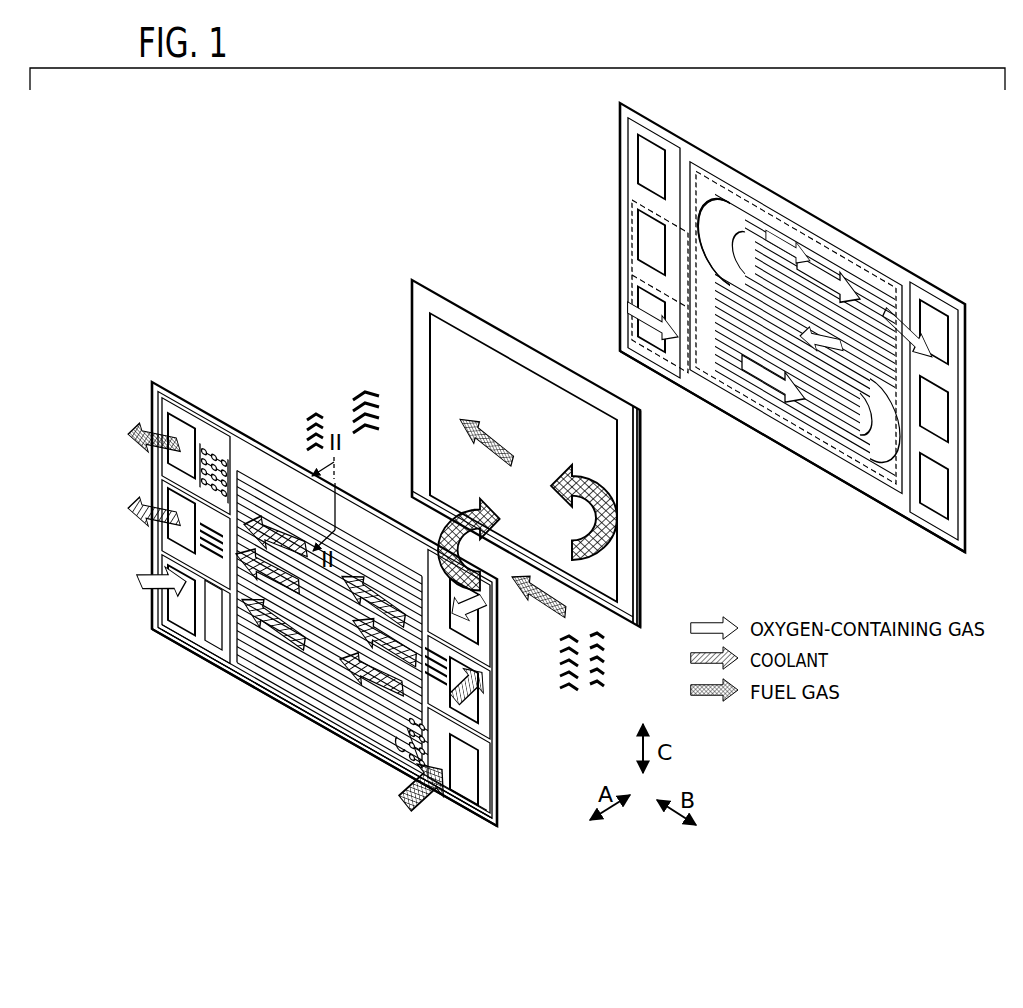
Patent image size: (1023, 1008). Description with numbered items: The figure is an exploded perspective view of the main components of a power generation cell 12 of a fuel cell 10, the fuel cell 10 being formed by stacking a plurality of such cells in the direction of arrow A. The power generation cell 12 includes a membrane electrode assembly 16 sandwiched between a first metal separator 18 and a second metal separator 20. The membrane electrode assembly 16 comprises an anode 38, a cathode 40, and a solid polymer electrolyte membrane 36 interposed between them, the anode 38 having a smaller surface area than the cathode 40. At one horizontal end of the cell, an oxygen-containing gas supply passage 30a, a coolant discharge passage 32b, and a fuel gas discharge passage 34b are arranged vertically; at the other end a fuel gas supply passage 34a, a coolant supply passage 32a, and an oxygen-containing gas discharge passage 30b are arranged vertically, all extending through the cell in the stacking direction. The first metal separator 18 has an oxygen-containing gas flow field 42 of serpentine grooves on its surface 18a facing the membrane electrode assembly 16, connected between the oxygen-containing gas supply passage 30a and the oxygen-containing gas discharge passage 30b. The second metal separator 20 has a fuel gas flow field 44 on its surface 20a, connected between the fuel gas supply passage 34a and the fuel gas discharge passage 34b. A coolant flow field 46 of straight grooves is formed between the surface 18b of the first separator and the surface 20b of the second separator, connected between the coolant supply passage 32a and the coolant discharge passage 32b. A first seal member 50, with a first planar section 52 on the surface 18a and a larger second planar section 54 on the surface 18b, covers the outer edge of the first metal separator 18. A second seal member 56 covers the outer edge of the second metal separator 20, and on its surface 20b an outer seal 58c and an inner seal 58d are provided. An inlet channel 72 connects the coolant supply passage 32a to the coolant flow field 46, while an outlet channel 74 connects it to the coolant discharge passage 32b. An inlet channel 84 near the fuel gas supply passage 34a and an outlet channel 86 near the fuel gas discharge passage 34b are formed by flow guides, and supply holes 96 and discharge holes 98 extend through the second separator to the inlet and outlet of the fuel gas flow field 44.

The fuel cell 10 is at (262, 263).
The power generation cell 12 is at (230, 263).
The membrane electrode assembly 16 is at (686, 442).
The first metal separator 18 is at (942, 285).
The surface of first metal separator 18a is at (922, 517).
The surface of first metal separator 18b is at (952, 535).
The second metal separator 20 is at (151, 380).
The surface of second metal separator 20a is at (383, 510).
The surface of second metal separator 20b is at (303, 705).
The oxygen-containing gas supply passage 30a is at (174, 582).
The oxygen-containing gas discharge passage 30b is at (472, 618).
The coolant supply passage 32a is at (470, 676).
The coolant discharge passage 32b is at (174, 507).
The fuel gas supply passage 34a is at (470, 760).
The fuel gas discharge passage 34b is at (174, 432).
The solid polymer electrolyte membrane 36 is at (625, 470).
The anode 38 is at (612, 447).
The cathode 40 is at (640, 492).
The oxygen-containing gas flow field 42 is at (732, 215).
The fuel gas flow field 44 is at (345, 513).
The coolant flow field 46 is at (262, 470).
The first seal member 50 is at (856, 256).
The first planar section 52 is at (848, 470).
The second planar section 54 is at (826, 242).
The second seal member 56 is at (352, 748).
The outer seal 58c is at (234, 672).
The inner seal 58d is at (273, 682).
The inlet channel 72 is at (443, 652).
The outlet channel 74 is at (208, 560).
The inlet channel 84 is at (446, 733).
The outlet channel 86 is at (213, 440).
The supply holes 96 is at (402, 773).
The discharge holes 98 is at (224, 452).